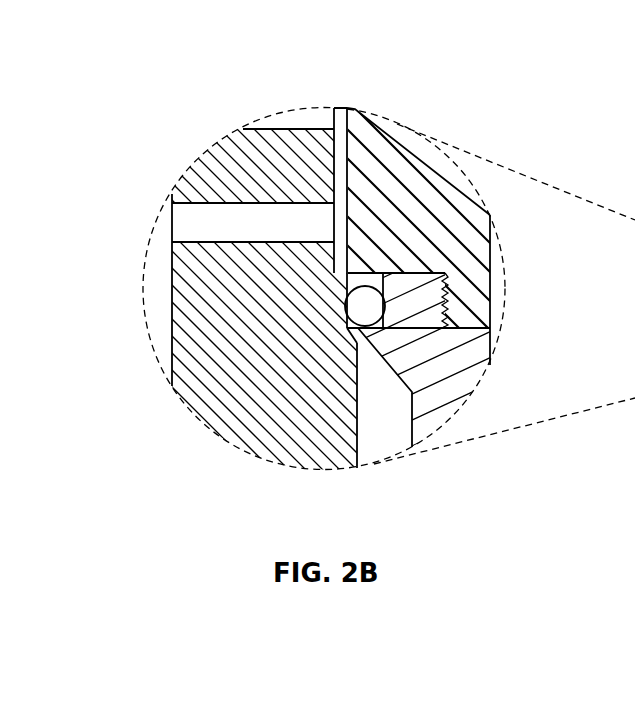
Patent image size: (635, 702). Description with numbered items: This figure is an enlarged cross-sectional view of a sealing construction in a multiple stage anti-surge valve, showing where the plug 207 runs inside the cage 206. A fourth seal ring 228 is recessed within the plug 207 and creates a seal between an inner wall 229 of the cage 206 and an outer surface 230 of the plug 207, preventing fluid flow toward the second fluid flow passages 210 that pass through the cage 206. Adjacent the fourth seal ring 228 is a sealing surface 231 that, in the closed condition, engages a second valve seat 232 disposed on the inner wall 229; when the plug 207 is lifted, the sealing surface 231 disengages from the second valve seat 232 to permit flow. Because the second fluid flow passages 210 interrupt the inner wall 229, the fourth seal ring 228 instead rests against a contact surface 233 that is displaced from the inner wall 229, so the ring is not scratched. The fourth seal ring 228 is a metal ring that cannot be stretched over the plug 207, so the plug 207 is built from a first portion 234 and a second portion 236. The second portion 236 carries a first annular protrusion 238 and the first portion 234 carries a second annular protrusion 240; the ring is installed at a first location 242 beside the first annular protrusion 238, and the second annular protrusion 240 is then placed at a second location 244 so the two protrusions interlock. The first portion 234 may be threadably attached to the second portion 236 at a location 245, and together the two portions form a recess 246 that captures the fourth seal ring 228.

The cage 206 is at (205, 377).
The plug 207 is at (382, 133).
The second fluid flow passages 210 is at (240, 222).
The fourth seal ring 228 is at (367, 312).
The inner wall 229 is at (297, 131).
The outer surface 230 is at (334, 108).
The sealing surface 231 is at (360, 331).
The second valve seat 232 is at (345, 353).
The contact surface 233 is at (345, 303).
The first portion 234 is at (462, 227).
The second portion 236 is at (437, 393).
The first annular protrusion 238 is at (415, 283).
The second annular protrusion 240 is at (473, 293).
The first location 242 is at (343, 330).
The second location 244 is at (477, 328).
The location 245 is at (492, 253).
The recess 246 is at (443, 333).